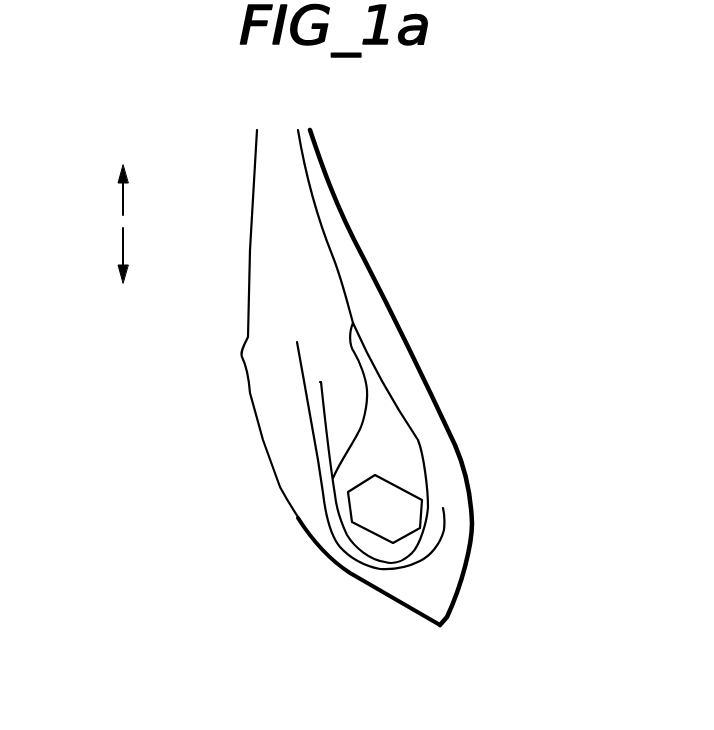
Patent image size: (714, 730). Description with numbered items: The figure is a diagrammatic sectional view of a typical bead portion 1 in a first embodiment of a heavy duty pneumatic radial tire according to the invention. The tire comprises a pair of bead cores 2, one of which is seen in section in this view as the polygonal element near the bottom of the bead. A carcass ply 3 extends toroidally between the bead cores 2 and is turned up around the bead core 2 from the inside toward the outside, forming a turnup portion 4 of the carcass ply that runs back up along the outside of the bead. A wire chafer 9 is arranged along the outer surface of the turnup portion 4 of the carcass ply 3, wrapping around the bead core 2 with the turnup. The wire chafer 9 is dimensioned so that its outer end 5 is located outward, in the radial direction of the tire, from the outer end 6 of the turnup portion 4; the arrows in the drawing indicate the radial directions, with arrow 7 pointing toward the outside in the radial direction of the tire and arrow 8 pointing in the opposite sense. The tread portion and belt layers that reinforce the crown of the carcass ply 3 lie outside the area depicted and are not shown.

The bead portion 1 is at (393, 183).
The bead core 2 is at (380, 522).
The carcass ply 3 is at (334, 265).
The turnup portion of the carcass ply 4 is at (314, 443).
The outer end of the wire chafer 5 is at (296, 341).
The outer end of the turnup portion 6 is at (319, 381).
The outside in the radial direction of the tire 7 is at (120, 193).
The opposite spanwise direction arrow 8 is at (120, 247).
The wire chafer 9 is at (323, 491).